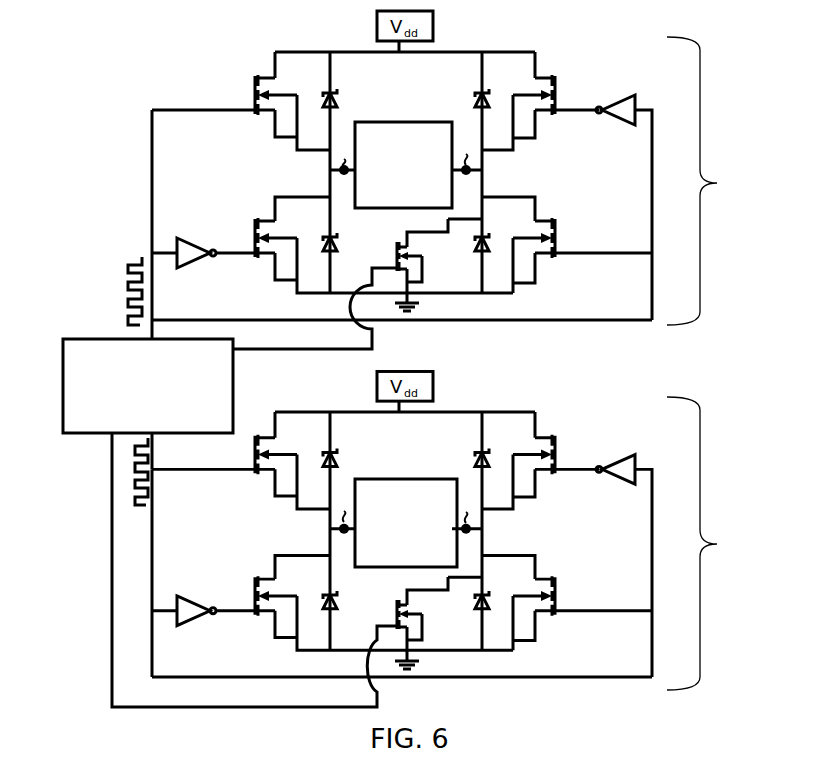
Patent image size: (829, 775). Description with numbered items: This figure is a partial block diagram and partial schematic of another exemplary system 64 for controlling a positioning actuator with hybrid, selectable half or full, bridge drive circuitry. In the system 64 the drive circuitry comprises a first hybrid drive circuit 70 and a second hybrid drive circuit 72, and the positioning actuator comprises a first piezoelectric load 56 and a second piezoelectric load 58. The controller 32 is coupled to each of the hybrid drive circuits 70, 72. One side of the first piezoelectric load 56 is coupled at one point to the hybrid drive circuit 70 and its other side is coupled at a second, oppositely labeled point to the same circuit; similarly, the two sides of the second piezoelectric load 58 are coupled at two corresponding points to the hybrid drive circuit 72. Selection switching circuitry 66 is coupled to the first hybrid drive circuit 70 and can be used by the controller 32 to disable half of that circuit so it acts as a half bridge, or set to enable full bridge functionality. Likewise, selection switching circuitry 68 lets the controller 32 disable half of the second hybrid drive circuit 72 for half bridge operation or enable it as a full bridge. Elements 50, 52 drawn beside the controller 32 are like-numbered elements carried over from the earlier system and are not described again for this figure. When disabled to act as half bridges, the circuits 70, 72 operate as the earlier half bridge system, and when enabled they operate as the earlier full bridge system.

The exemplary system 64 is at (80, 81).
The first hybrid drive circuit 70 is at (451, 180).
The second hybrid drive circuit 72 is at (429, 539).
The first piezoelectric load 56 is at (399, 121).
The second piezoelectric load 58 is at (399, 480).
The selection switching circuitry 66 is at (375, 256).
The selection switching circuitry 68 is at (375, 614).
The first resistor 50 is at (128, 302).
The second resistor 52 is at (137, 482).
The controller 32 is at (62, 390).